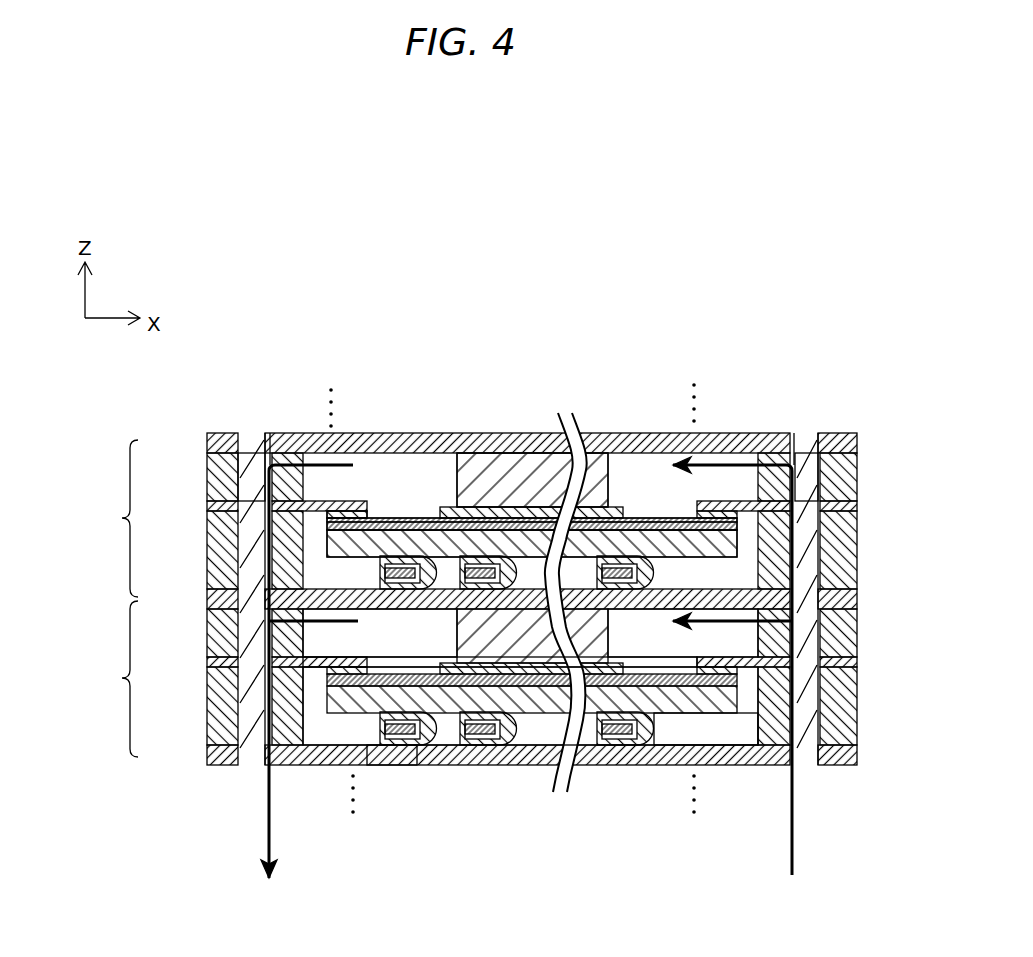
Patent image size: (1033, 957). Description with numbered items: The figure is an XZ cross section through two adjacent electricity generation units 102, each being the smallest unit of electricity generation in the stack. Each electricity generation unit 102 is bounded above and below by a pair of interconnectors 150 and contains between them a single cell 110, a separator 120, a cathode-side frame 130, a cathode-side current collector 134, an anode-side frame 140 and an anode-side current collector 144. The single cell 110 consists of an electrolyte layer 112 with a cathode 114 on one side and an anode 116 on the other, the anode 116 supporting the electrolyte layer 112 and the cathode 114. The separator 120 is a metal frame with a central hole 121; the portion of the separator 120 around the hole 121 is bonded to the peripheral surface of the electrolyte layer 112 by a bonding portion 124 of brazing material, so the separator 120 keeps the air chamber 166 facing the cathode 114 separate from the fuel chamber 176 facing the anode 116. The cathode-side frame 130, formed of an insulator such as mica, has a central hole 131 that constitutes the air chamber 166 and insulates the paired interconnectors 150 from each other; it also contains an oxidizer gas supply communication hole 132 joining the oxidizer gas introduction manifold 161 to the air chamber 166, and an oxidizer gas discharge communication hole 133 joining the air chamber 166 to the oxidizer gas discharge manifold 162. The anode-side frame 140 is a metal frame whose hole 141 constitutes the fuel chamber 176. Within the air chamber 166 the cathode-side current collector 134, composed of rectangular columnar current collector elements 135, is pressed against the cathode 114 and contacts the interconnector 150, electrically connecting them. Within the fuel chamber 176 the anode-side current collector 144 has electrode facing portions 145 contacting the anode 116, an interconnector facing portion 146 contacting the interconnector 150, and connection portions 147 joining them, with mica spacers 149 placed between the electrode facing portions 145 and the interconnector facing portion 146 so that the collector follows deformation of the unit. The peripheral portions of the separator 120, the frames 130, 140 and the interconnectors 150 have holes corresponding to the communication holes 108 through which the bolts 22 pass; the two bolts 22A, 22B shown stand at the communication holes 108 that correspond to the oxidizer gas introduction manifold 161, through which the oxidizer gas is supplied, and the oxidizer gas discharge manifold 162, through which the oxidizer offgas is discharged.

The bolt 22 is at (533, 557).
The bolt (oxidant gas supply side) 22A is at (813, 433).
The bolt (oxidant gas discharge side) 22B is at (253, 433).
The electricity generation unit 102 is at (105, 598).
The communication hole 108 is at (530, 688).
The oxidizer gas introduction manifold 161 is at (826, 760).
The oxidizer gas discharge manifold 162 is at (241, 765).
The single cell 110 is at (495, 338).
The electrolyte layer 112 is at (413, 516).
The cathode 114 is at (432, 512).
The anode 116 is at (400, 520).
The separator 120 is at (207, 505).
The hole 121 is at (370, 662).
The bonding portion 124 is at (376, 512).
The cathode-side frame 130 is at (207, 473).
The hole 131 is at (305, 640).
The oxidizer gas supply communication hole 132 is at (775, 433).
The oxidizer gas discharge communication hole 133 is at (283, 433).
The cathode-side current collector 134 is at (457, 466).
The current collector element 135 is at (532, 480).
The anode-side frame 140 is at (207, 560).
The hole 141 is at (305, 728).
The anode-side current collector 144 is at (517, 740).
The electrode facing portion 145 is at (443, 765).
The interconnector facing portion 146 is at (478, 765).
The connection portion 147 is at (581, 714).
The spacer 149 is at (392, 765).
The interconnector 150 is at (207, 443).
The air chamber 166 is at (657, 649).
The fuel chamber 176 is at (721, 742).